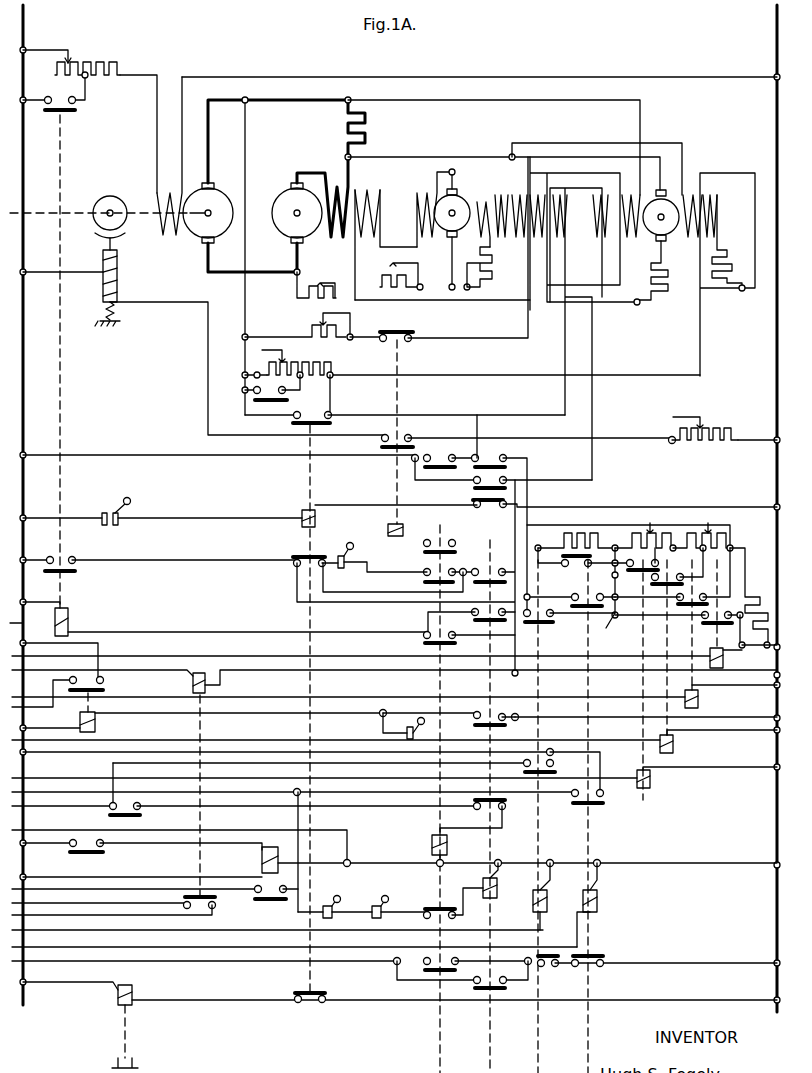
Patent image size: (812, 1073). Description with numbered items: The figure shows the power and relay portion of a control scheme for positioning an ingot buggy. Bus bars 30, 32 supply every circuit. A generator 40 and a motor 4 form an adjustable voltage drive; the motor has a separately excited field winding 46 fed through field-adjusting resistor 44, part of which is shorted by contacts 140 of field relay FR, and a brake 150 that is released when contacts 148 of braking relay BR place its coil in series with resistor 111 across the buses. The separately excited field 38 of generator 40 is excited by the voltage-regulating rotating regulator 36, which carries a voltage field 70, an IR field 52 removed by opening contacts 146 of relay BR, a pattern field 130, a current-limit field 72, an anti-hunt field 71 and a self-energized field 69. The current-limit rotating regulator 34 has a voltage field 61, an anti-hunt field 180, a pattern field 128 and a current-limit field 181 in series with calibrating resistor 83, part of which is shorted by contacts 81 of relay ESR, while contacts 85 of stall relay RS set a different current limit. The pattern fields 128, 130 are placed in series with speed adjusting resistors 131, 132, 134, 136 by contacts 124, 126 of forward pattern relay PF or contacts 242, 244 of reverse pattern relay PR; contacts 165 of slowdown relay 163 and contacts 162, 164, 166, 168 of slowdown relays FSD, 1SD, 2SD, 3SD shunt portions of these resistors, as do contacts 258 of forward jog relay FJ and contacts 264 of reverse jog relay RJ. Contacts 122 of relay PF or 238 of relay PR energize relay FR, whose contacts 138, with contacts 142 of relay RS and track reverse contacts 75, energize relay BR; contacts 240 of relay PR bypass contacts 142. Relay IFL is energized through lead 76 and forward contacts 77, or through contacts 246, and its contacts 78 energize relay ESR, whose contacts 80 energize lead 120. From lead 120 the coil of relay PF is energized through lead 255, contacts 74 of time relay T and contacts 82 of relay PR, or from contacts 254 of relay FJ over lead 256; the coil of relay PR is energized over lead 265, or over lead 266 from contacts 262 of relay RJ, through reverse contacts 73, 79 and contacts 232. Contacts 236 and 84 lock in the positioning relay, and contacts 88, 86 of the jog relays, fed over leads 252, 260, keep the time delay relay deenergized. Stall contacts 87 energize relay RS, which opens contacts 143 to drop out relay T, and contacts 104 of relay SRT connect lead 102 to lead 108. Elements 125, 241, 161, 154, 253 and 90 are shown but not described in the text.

The bus bar 30 is at (23, 29).
The bus bar 32 is at (777, 19).
The field-adjusting resistor 44 is at (105, 62).
The contacts of field relay FR 140 is at (72, 114).
The separately excited field winding of motor 46 is at (169, 192).
The motor 4 is at (203, 181).
The generator 40 is at (282, 189).
The separately excited field winding of generator 38 is at (383, 195).
The self-energized field 69 is at (418, 198).
The voltage-regulating generator 36 is at (447, 255).
The anti-hunt field 71 is at (478, 200).
The voltage field 70 is at (502, 206).
The IR field 52 is at (520, 206).
The current limit field 72 is at (540, 204).
The pattern field 130 is at (580, 222).
The pattern field 128 is at (598, 235).
The voltage field 61 is at (632, 204).
The current-limit regulating generator 34 is at (649, 253).
The current limit field 181 is at (668, 270).
The anti-hunt field 180 is at (715, 205).
The brake 150 is at (118, 285).
The field relay FR is at (70, 612).
The contacts of braking relay BR 146 is at (406, 332).
The calibrating resistor 83 is at (330, 365).
The contacts of relay ESR 81 is at (287, 398).
The contacts of relay RS 85 is at (333, 423).
The braking relay BR is at (400, 425).
The contacts of braking relay BR 148 is at (378, 447).
The resistor 111 is at (740, 423).
The contacts of forward pattern relay PF 126 is at (439, 461).
The contacts of reverse pattern relay PR 244 is at (491, 461).
The contacts of reverse pattern relay PR 242 is at (475, 487).
The conductor 125 is at (545, 479).
The contact 241 is at (472, 507).
The stall relay RS is at (308, 500).
The final stall contacts 87 is at (127, 510).
The contacts of field relay FR 138 is at (74, 574).
The contacts of stall relay RS 142 is at (303, 553).
The track reverse contacts 75 is at (348, 568).
The contacts of reverse pattern relay PR 240 is at (497, 564).
The contacts of forward pattern relay PF 124 is at (456, 551).
The contacts of reverse pattern relay PR 238 is at (471, 620).
The contacts of forward pattern relay PF 122 is at (470, 645).
The speed adjusting resistor 131 is at (588, 533).
The speed adjusting resistor 132 is at (632, 532).
The speed adjusting resistor 134 is at (697, 533).
The slowdown relay 163 is at (565, 567).
The contacts of slowdown relay 163 165 is at (583, 573).
The contacts of relay FSD 162 is at (637, 571).
The contacts of relay 1SD 164 is at (672, 574).
The contacts of relay 2SD 166 is at (690, 598).
The contacts of relay 3SD 168 is at (715, 617).
The speed adjusting resistor 136 is at (763, 595).
The contacts of reverse jog relay RJ 264 is at (570, 606).
The contacts of forward jog relay FJ 258 is at (552, 626).
The switch 161 is at (613, 624).
The third slowdown relay 3SD is at (724, 662).
The slowdown relay 2SD is at (699, 701).
The slowdown relay 1SD is at (674, 746).
The final slowdown relay FSD is at (651, 781).
The relay SRT is at (485, 703).
The contact 154 is at (104, 689).
The relay 1FL IFL is at (96, 722).
The lead 76 is at (380, 728).
The forward contacts 77 is at (405, 724).
The contacts of reverse pattern relay PR 246 is at (477, 719).
The conductor 253 is at (33, 774).
The lead 256 is at (431, 767).
The contacts of forward jog relay FJ 254 is at (562, 771).
The lead 266 is at (480, 789).
The contacts of reverse jog relay RJ 262 is at (603, 808).
The lead 265 is at (97, 804).
The lead 255 is at (56, 804).
The contacts of time relay T 74 is at (141, 816).
The contacts of reverse pattern relay PR 82 is at (506, 806).
The contacts of relay 1FL 78 is at (100, 858).
The relay ESR is at (268, 836).
The lead 120 is at (170, 884).
The contacts of relay ESR 80 is at (277, 906).
The lead 102 is at (100, 903).
The contacts of relay SRT 104 is at (215, 903).
The lead 252 is at (40, 930).
The lead 108 is at (95, 917).
The lead 260 is at (105, 942).
The conductor 90 is at (84, 962).
The time delay relay T is at (126, 985).
The contacts of relay RS 143 is at (322, 995).
The forward pattern relay PF is at (447, 845).
The reverse pattern relay PR is at (495, 856).
The track reverse contacts 73 is at (327, 898).
The reverse contacts 79 is at (377, 898).
The contacts of forward pattern relay 232 is at (430, 920).
The contacts 84 is at (438, 975).
The contacts of reverse pattern relay PR 236 is at (508, 988).
The forward jog relay FJ is at (542, 848).
The reverse jog relay RJ is at (592, 848).
The contacts of forward jog relay FJ 88 is at (548, 968).
The contacts of reverse jog relay RJ 86 is at (588, 968).